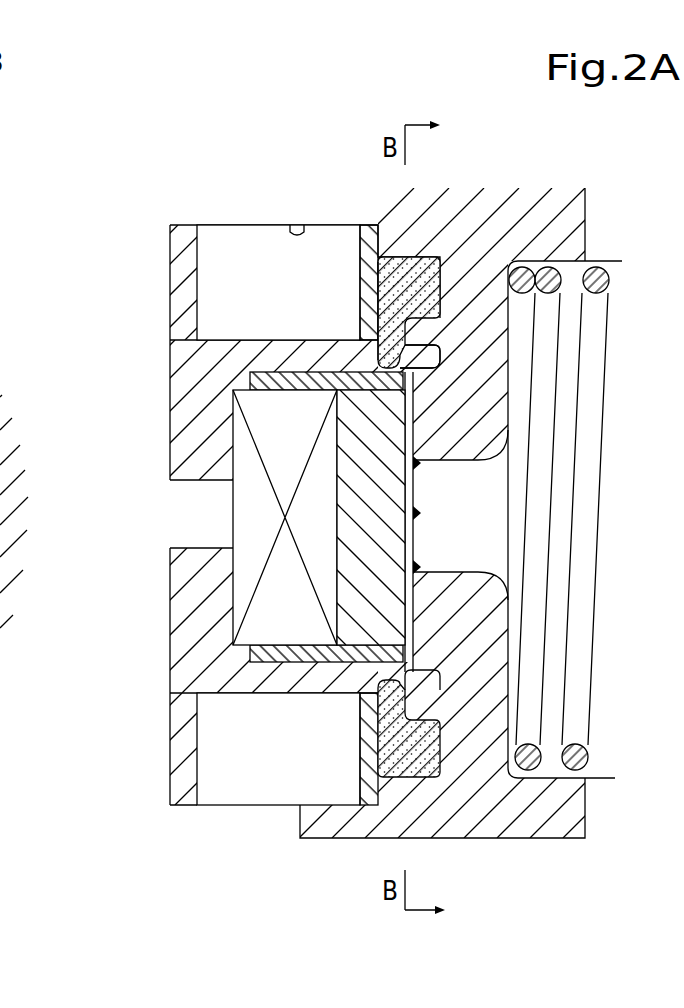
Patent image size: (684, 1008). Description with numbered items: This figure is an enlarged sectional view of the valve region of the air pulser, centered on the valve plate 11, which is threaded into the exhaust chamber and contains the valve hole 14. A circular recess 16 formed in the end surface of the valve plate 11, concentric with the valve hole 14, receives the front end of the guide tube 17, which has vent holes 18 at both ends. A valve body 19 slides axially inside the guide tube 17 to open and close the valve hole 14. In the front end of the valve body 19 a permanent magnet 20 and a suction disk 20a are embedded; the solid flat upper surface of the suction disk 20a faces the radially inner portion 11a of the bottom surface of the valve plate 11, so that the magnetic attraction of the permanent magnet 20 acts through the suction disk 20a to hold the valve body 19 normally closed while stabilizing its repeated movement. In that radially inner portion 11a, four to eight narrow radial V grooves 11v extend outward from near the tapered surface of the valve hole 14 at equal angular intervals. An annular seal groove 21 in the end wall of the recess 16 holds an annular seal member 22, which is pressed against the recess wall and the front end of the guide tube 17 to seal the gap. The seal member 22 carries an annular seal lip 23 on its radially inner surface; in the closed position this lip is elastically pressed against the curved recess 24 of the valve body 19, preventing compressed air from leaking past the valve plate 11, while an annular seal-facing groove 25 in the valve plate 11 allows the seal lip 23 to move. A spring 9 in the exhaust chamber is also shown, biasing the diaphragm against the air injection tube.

The spring 9 is at (595, 417).
The valve plate 11 is at (525, 205).
The radially inner portion of the valve plate 11a is at (487, 428).
The radial V grooves 11v is at (413, 566).
The valve hole 14 is at (500, 557).
The circular recess 16 is at (290, 220).
The guide tube 17 is at (178, 268).
The vent holes 18 is at (210, 238).
The valve body 19 is at (178, 392).
The permanent magnet 20 is at (250, 570).
The suction disk 20a is at (350, 598).
The annular seal groove 21 is at (428, 260).
The annular seal member 22 is at (392, 255).
The annular seal lip 23 is at (378, 300).
The curved recess 24 is at (372, 372).
The annular seal-facing groove 25 is at (440, 365).